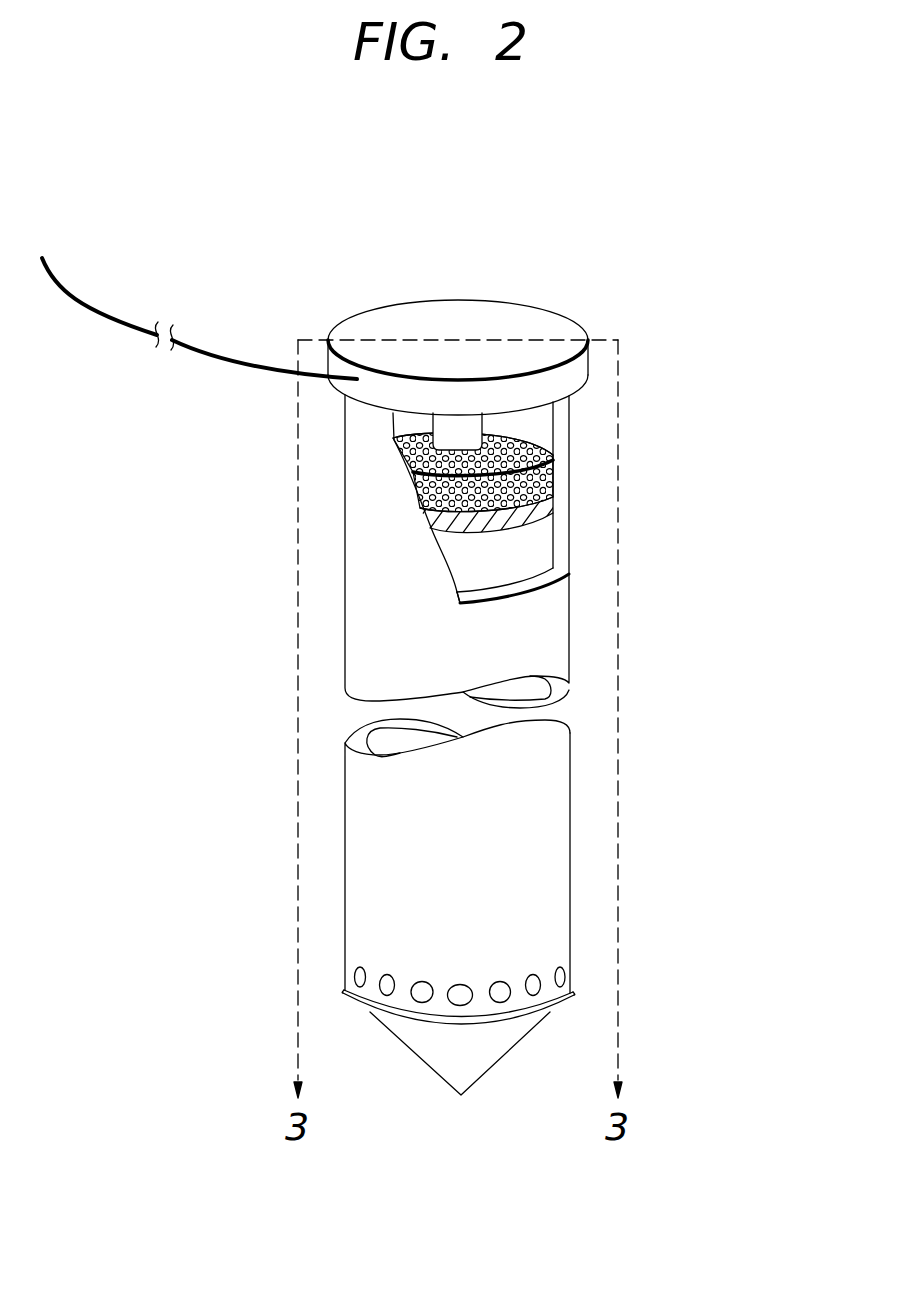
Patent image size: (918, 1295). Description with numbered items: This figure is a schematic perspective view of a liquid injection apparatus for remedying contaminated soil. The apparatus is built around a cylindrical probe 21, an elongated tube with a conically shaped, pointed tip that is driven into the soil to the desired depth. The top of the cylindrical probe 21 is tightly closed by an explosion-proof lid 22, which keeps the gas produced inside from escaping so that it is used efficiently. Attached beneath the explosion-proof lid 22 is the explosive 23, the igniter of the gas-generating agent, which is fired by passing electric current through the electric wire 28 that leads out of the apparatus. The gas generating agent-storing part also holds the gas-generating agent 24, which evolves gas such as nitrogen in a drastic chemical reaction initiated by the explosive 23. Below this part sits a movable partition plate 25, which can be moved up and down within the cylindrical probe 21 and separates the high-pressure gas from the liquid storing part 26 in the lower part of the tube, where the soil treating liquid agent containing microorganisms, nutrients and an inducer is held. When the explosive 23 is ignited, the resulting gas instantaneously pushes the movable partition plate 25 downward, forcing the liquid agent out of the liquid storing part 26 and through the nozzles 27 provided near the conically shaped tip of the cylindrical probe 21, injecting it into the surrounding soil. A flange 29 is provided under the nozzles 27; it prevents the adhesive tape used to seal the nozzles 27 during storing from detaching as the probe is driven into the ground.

The cylindrical probe 21 is at (540, 635).
The explosion-proof lid 22 is at (573, 373).
The explosive 23 is at (473, 423).
The granular material layer 24 is at (553, 470).
The movable partition plate 25 is at (543, 513).
The liquid storing part 26 is at (540, 543).
The nozzle 27 is at (537, 973).
The electric wire 28 is at (203, 350).
The flange 29 is at (574, 995).